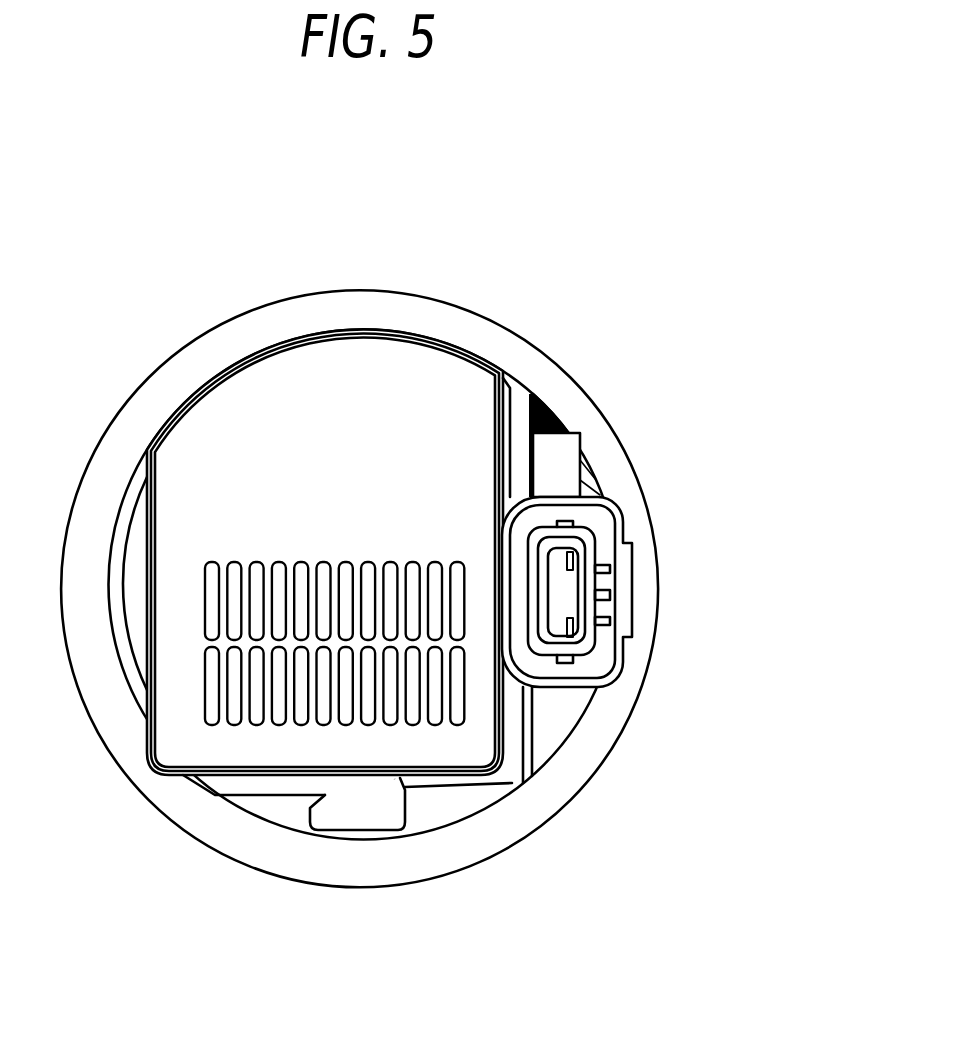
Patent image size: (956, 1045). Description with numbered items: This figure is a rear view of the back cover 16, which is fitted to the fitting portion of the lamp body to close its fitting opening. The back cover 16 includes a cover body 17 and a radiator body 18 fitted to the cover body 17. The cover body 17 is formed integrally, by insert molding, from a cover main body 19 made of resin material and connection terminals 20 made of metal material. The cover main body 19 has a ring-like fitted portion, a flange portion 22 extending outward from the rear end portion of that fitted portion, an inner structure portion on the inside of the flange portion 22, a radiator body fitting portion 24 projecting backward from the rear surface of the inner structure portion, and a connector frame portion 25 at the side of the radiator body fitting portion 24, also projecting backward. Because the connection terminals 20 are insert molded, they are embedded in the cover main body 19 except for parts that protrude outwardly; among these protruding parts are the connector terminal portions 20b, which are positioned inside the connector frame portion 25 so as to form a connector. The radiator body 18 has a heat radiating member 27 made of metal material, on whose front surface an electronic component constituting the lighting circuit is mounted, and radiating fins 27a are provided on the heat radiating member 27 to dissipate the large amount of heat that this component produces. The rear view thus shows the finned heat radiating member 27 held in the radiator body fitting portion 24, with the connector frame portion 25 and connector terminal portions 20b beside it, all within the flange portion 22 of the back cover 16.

The back cover 16 is at (553, 310).
The cover body 17 is at (606, 442).
The radiator body 18 is at (389, 362).
The cover main body 19 is at (633, 492).
The connection terminals 20 is at (561, 590).
The connector terminal portions 20b is at (573, 557).
The flange portion 22 is at (570, 383).
The radiator body fitting portion 24 is at (532, 730).
The connector frame portion 25 is at (627, 540).
The heat radiating member 27 is at (315, 370).
The radiating fins 27a is at (253, 562).